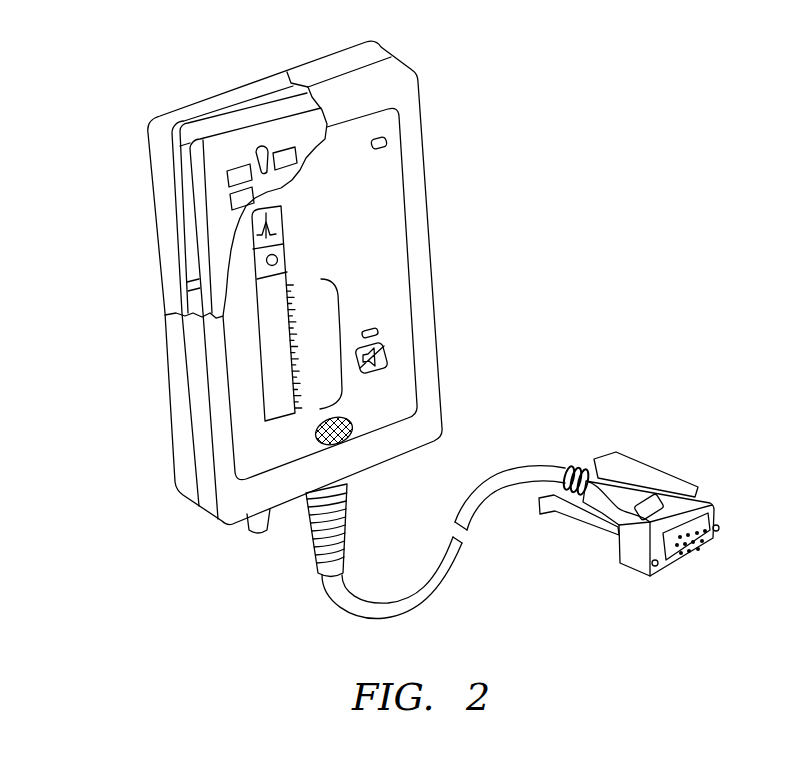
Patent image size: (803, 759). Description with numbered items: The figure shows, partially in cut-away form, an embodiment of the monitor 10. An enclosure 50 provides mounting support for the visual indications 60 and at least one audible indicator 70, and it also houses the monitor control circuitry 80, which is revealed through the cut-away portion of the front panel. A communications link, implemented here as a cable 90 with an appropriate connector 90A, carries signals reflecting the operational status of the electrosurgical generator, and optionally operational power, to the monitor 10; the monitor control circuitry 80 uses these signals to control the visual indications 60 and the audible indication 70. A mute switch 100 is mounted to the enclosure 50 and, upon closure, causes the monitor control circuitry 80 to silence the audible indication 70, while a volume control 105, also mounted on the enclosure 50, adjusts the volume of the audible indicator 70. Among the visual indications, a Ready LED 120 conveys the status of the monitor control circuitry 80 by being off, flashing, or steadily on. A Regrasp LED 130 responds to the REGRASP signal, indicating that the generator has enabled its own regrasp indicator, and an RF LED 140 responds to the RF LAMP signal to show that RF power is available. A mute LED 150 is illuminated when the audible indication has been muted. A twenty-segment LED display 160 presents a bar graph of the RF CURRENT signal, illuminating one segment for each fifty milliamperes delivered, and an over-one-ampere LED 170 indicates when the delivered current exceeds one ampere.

The monitor 10 is at (296, 331).
The enclosure 50 is at (413, 72).
The visual indications 60 is at (364, 159).
The audible indicator 70 is at (318, 433).
The monitor control circuitry 80 is at (213, 210).
The cable 90 is at (458, 572).
The connector 90A is at (709, 482).
The mute switch 100 is at (402, 364).
The volume control 105 is at (258, 535).
The Ready LED 120 is at (398, 138).
The Regrasp LED 130 is at (287, 218).
The RF LED 140 is at (291, 249).
The mute LED 150 is at (397, 331).
The LED display 160 is at (341, 338).
The 1A LED 170 is at (294, 279).